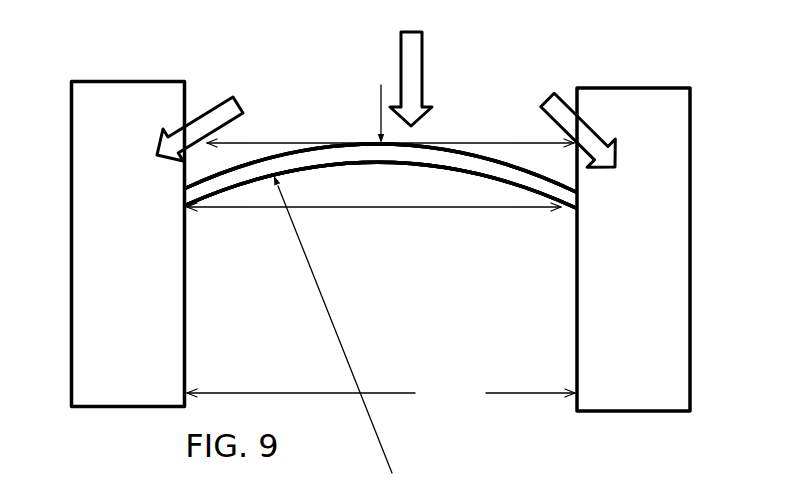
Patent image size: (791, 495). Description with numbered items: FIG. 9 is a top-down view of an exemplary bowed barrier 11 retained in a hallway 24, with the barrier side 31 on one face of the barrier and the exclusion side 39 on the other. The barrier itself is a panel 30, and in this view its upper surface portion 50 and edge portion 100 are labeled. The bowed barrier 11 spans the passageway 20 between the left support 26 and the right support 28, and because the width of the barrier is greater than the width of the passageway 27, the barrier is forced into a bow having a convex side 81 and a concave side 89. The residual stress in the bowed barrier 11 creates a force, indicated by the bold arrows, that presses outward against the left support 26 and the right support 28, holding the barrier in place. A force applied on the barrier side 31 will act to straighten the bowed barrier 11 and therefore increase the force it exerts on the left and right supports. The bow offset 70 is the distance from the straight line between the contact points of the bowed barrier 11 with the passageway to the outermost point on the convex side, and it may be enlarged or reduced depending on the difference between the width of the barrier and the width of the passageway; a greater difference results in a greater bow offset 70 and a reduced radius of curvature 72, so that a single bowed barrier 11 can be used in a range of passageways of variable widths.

The bowed barrier 11 is at (452, 70).
The passageway 20 is at (573, 100).
The hallway 24 is at (187, 100).
The left support 26 is at (185, 347).
The width of the passageway 27 is at (381, 393).
The right support 28 is at (575, 372).
The panel 30 is at (437, 158).
The barrier side 31 is at (312, 138).
The exclusion side 39 is at (511, 189).
The upper surface portion 50 is at (487, 159).
The bow offset 70 is at (380, 216).
The radius of curvature 72 is at (340, 321).
The convex side 81 is at (260, 150).
The concave side 89 is at (458, 178).
The edge portion 100 is at (550, 208).